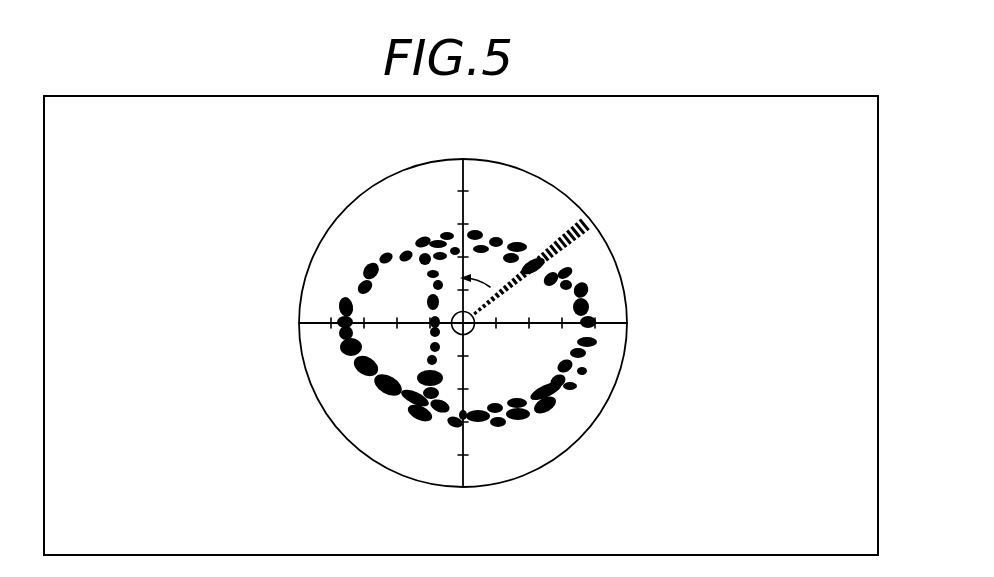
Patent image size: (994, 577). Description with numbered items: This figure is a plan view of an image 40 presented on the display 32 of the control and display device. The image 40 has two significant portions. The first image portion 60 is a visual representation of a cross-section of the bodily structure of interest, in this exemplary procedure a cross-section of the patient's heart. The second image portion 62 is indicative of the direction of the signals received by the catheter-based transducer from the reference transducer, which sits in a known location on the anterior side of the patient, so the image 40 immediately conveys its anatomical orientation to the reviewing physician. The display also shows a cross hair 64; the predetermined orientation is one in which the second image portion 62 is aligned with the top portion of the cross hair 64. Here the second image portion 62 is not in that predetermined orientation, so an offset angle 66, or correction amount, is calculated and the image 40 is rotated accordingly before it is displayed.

The display 32 is at (683, 115).
The image 40 is at (492, 191).
The first image portion 60 is at (567, 390).
The second image portion 62 is at (593, 228).
The cross hair 64 is at (463, 178).
The offset angle 66 is at (487, 284).